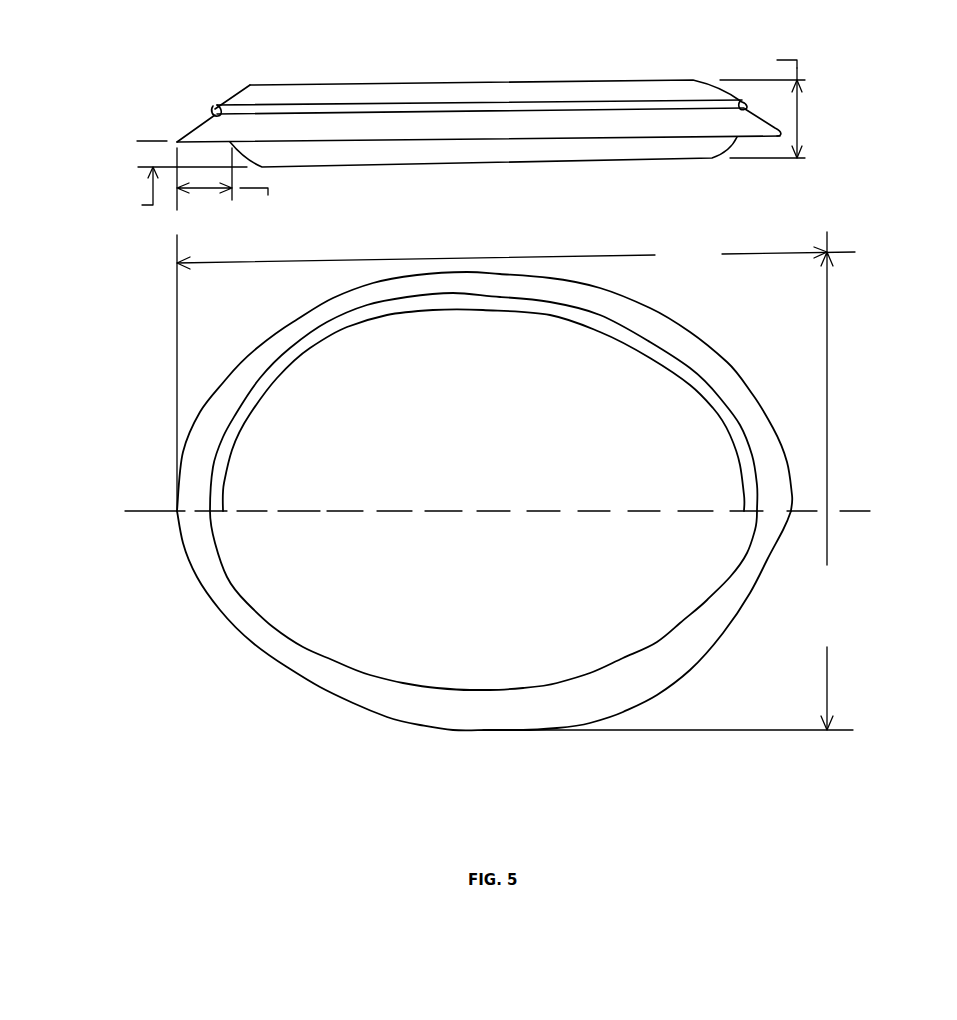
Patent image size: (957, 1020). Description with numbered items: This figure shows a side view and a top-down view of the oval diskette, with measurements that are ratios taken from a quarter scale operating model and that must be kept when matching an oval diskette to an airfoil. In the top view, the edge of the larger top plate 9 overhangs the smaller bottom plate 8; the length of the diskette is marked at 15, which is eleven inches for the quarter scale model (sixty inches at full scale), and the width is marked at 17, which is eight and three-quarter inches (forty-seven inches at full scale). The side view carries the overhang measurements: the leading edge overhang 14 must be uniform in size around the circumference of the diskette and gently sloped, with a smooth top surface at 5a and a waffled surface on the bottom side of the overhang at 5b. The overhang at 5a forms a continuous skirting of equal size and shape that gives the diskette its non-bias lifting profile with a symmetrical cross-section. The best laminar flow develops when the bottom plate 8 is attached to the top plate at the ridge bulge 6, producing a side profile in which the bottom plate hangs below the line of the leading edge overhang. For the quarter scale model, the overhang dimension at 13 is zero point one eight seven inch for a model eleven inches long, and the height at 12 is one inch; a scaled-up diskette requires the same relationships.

The leading edge overhang top surface 5a is at (193, 478).
The leading edge overhang bottom surface 5b is at (203, 552).
The ridge bulge 6 is at (233, 438).
The bottom plate 8 is at (637, 595).
The top plate 9 is at (621, 453).
The height measurement 12 is at (810, 99).
The overhang measurement 13 is at (459, 123).
The leading edge overhang 14 is at (198, 211).
The length measurement 15 is at (782, 244).
The width measurement 17 is at (832, 690).